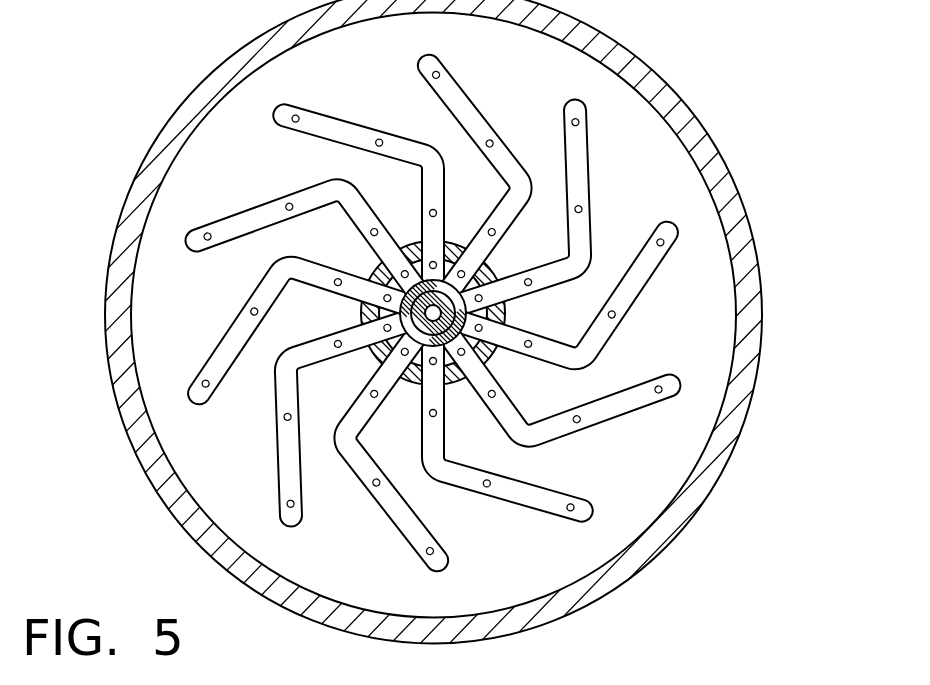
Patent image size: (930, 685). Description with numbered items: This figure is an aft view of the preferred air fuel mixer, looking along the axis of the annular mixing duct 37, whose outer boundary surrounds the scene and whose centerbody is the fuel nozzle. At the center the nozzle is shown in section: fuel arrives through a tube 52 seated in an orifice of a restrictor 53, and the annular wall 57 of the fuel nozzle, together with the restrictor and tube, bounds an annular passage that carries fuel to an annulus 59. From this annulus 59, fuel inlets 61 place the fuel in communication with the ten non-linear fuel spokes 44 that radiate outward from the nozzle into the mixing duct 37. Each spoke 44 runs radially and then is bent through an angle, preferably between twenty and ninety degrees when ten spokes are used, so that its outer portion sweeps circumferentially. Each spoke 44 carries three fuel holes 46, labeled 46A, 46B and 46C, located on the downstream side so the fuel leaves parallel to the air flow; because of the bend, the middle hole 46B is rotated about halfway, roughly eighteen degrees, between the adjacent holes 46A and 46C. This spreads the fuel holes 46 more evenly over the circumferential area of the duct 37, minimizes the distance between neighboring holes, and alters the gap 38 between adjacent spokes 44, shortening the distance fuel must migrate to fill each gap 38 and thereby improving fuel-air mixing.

The annular mixing duct 37 is at (741, 394).
The gap between spokes 38 is at (421, 113).
The non-linear fuel spoke 44 is at (650, 272).
The fuel hole 46 is at (487, 488).
The fuel hole 46A is at (655, 385).
The fuel hole 46B is at (578, 421).
The fuel hole 46C is at (593, 364).
The tube 52 is at (377, 355).
The restrictor 53 is at (372, 305).
The annular wall of fuel nozzle 57 is at (420, 246).
The annulus 59 is at (488, 314).
The fuel inlet 61 is at (467, 270).